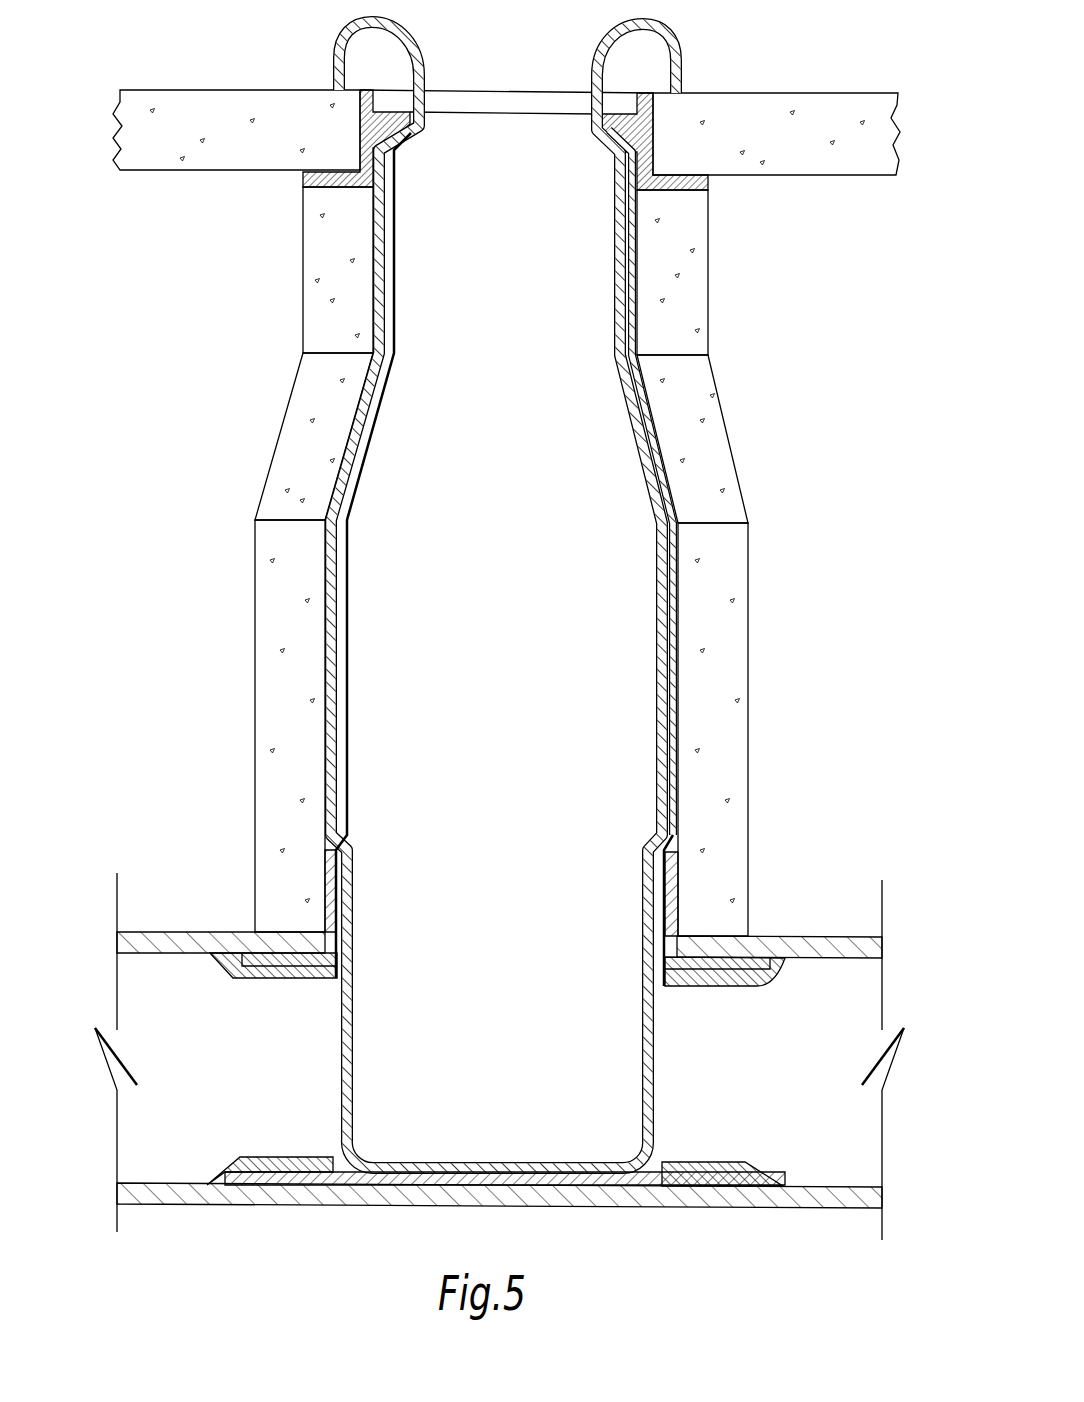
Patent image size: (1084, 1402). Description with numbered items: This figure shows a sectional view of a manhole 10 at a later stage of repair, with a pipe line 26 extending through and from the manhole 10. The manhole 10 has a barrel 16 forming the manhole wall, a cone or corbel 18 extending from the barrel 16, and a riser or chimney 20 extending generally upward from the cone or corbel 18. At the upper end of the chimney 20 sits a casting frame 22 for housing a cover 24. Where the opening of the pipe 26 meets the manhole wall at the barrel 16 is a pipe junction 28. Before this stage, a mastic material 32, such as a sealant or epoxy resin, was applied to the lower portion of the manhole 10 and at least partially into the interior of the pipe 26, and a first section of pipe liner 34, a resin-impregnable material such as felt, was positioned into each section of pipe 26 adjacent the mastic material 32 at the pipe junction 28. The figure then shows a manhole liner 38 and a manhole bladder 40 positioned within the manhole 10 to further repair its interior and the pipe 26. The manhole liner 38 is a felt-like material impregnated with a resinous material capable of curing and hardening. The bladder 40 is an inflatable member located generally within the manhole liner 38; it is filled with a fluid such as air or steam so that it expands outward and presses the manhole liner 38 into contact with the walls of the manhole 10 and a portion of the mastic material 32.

The manhole 10 is at (777, 23).
The barrel 16 is at (742, 676).
The cone or corbel 18 is at (713, 420).
The riser or chimney 20 is at (693, 270).
The casting frame 22 is at (708, 180).
The cover 24 is at (490, 100).
The pipe line 26 is at (210, 932).
The pipe junction 28 is at (680, 936).
The mastic material 32 is at (665, 961).
The pipe liner 34 is at (272, 982).
The manhole liner 38 is at (332, 692).
The manhole bladder 40 is at (658, 676).